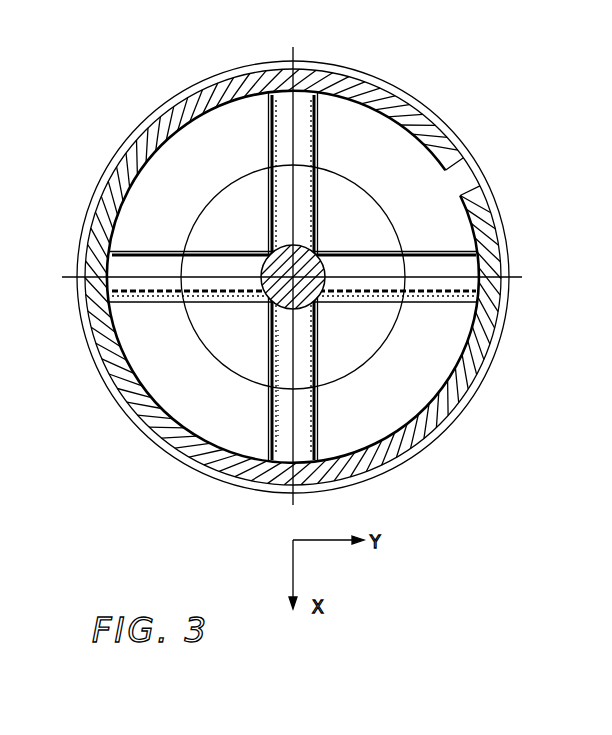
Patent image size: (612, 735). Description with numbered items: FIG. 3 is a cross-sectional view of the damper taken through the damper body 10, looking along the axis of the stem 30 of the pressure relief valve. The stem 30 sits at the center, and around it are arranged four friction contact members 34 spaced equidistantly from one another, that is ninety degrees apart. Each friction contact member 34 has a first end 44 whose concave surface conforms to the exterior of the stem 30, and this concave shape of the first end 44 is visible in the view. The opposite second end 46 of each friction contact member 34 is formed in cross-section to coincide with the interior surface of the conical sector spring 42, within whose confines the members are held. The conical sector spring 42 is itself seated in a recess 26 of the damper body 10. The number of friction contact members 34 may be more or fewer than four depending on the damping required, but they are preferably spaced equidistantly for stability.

The damper body 10 is at (472, 152).
The recess 26 is at (333, 68).
The conical sector spring 42 is at (110, 182).
The second end 46 is at (282, 100).
The first end 44 is at (263, 246).
The friction contact member 34 is at (300, 331).
The stem 30 is at (320, 247).